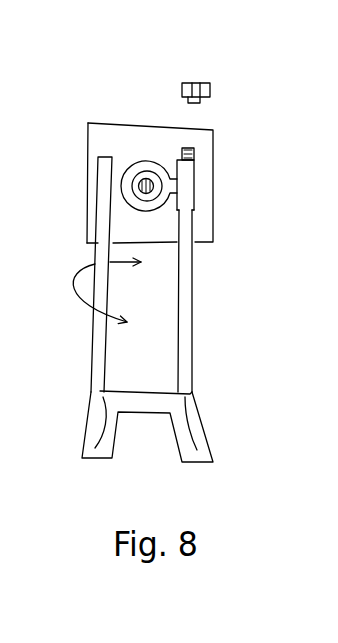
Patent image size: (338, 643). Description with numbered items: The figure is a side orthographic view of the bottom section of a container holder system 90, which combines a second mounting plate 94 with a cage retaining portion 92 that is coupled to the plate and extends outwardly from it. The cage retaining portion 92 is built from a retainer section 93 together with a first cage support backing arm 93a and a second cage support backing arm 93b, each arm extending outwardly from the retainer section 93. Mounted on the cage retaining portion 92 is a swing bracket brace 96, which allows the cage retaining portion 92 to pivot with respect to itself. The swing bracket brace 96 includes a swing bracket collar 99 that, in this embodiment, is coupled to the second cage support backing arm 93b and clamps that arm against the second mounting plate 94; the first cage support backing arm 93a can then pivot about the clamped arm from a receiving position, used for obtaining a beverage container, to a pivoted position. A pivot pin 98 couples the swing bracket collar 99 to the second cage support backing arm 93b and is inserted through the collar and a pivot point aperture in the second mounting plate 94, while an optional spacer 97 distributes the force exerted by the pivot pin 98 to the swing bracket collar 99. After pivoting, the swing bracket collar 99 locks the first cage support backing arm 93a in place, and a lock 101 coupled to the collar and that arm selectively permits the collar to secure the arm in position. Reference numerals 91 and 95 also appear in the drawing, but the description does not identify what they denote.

The bottom section of a container holder system 90 is at (63, 141).
The mounting bracket 91 is at (85, 233).
The cage retaining portion 92 is at (77, 448).
The retainer section 93 is at (133, 379).
The first cage support backing arm 93a is at (90, 372).
The second cage support backing arm 93b is at (190, 375).
The second mounting plate 94 is at (92, 197).
The pivot assembly 95 is at (132, 158).
The swing bracket brace 96 is at (160, 165).
The spacer 97 is at (138, 198).
The pivot pin 98 is at (149, 193).
The swing bracket collar 99 is at (197, 177).
The lock 101 is at (212, 92).